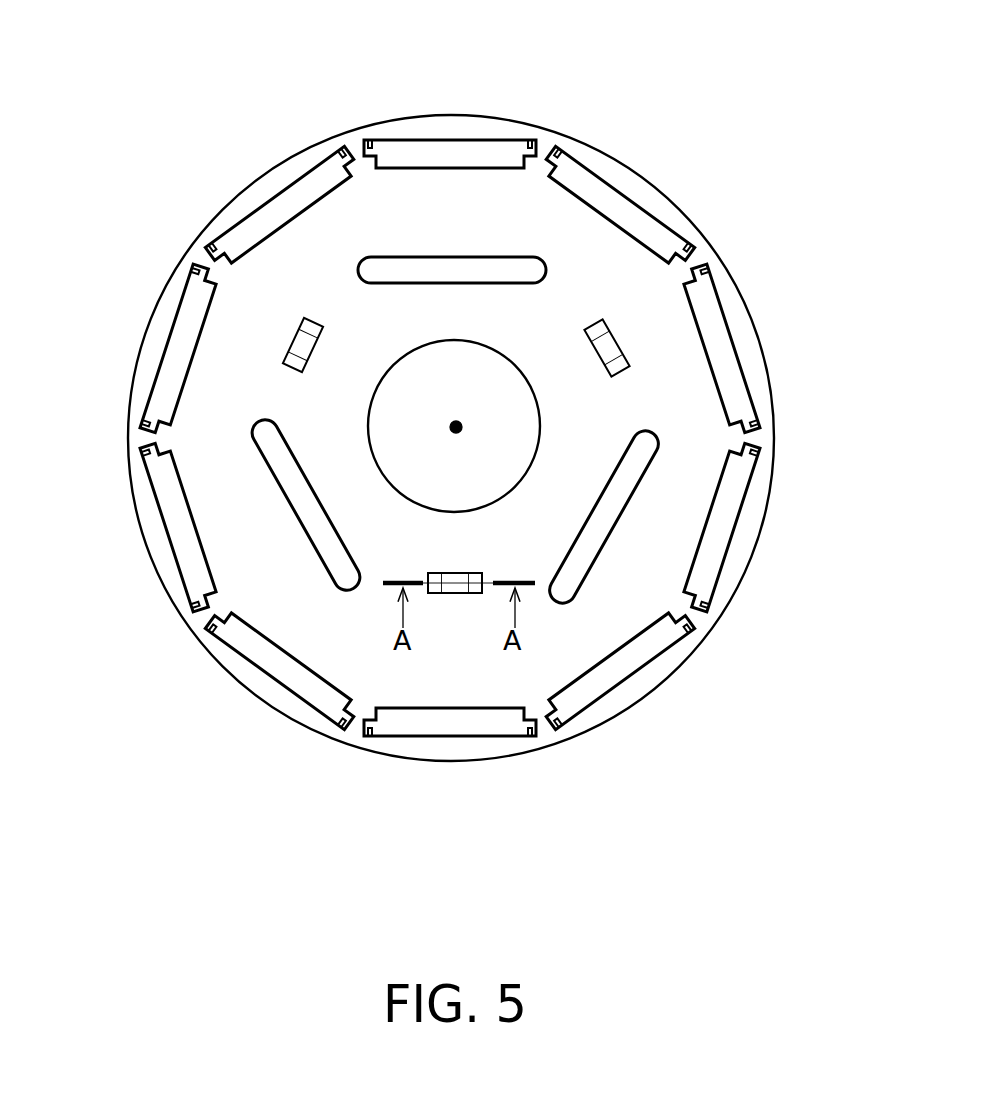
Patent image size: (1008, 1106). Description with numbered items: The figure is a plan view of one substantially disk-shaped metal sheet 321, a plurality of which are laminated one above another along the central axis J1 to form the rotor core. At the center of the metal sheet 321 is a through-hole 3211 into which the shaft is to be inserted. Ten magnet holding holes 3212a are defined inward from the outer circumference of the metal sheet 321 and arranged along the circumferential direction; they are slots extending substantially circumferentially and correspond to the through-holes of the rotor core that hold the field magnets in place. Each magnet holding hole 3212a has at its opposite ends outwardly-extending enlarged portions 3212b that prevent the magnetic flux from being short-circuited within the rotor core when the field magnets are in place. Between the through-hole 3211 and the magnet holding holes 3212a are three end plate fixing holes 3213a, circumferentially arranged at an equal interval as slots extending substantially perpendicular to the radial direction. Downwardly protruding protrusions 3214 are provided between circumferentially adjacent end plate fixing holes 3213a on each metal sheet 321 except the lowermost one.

The metal sheet 321 is at (170, 89).
The through-hole 3211 is at (508, 445).
The magnet holding hole 3212a is at (448, 160).
The enlarged portion 3212b is at (366, 140).
The end plate fixing hole 3213a is at (522, 262).
The protrusion 3214 is at (302, 318).
The central axis J1 is at (459, 421).